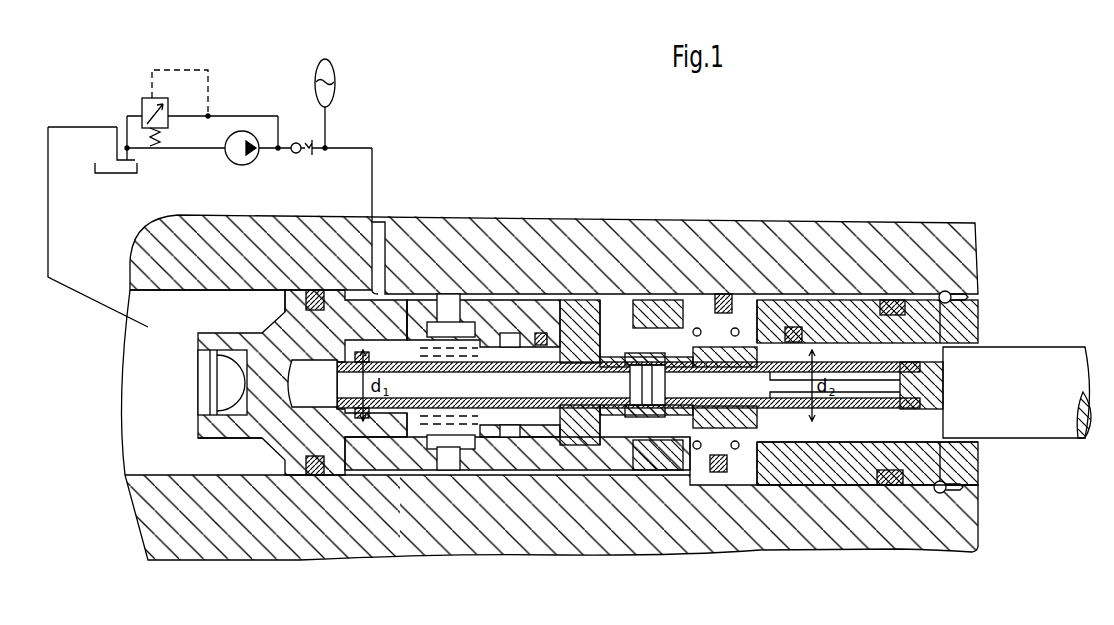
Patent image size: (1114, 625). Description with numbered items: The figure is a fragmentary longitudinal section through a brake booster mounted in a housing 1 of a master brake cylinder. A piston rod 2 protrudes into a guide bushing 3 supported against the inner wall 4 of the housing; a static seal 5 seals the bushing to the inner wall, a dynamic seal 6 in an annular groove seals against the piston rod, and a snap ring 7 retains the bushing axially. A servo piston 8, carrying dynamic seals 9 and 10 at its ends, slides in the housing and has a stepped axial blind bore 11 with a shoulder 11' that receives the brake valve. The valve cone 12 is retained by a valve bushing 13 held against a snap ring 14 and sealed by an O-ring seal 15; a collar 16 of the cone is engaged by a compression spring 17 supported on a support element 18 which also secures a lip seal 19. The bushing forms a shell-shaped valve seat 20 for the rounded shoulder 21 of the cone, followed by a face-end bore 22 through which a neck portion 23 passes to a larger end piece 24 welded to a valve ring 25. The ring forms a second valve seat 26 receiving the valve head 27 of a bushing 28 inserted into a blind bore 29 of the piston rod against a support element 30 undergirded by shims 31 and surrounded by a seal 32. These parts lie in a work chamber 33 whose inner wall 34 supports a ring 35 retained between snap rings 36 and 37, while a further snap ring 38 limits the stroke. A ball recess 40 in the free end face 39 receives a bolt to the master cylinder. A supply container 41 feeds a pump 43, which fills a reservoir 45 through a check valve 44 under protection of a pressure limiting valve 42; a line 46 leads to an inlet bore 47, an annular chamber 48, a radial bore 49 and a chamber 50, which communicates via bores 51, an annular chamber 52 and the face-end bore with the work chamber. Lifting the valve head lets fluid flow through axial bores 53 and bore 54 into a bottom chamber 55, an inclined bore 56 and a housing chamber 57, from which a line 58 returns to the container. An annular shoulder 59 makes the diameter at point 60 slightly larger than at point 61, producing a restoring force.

The housing 1 is at (835, 272).
The piston rod 2 is at (1015, 355).
The guide bushing 3 is at (968, 315).
The inner wall 4 is at (197, 474).
The static seal 5 is at (888, 298).
The dynamic seal 6 is at (800, 300).
The snap ring 7 is at (944, 290).
The servo piston 8 is at (655, 352).
The dynamic seal 9 is at (730, 294).
The dynamic seal 10 is at (315, 290).
The stepped axial blind bore 11 is at (517, 514).
The shoulder 11' is at (413, 446).
The valve cone 12 is at (485, 320).
The valve bushing 13 is at (600, 345).
The snap ring 14 is at (635, 348).
The O-ring seal 15 is at (560, 320).
The collar 16 is at (505, 430).
The compression spring 17 is at (462, 318).
The support element 18 is at (412, 320).
The lip seal 19 is at (400, 440).
The shell-shaped valve seat 20 is at (580, 445).
The rounded shoulder 21 is at (585, 300).
The face-end bore 22 is at (605, 445).
The neck portion 23 is at (612, 348).
The larger end piece 24 is at (642, 350).
The valve ring 25 is at (640, 470).
The second valve seat 26 is at (695, 328).
The valve head 27 is at (708, 300).
The bushing 28 is at (837, 440).
The blind bore 29 is at (830, 440).
The support element 30 is at (905, 445).
The shims 31 is at (935, 445).
The seal 32 is at (862, 445).
The work chamber 33 is at (760, 300).
The inner wall 34 is at (666, 330).
The ring 35 is at (757, 430).
The snap ring 36 is at (719, 474).
The snap ring 37 is at (738, 449).
The snap ring 38 is at (692, 478).
The free end face 39 is at (197, 420).
The ball recess 40 is at (208, 367).
The brake fluid supply container 41 is at (113, 174).
The pressure limiting valve 42 is at (147, 97).
The pump 43 is at (260, 158).
The one-way check valve 44 is at (296, 142).
The reservoir 45 is at (331, 70).
The line 46 is at (368, 146).
The inlet bore 47 is at (378, 230).
The annular chamber 48 is at (500, 333).
The radial bore 49 is at (444, 294).
The chamber 50 is at (455, 445).
The bores 51 is at (515, 432).
The annular chamber 52 is at (535, 333).
The axial bores 53 is at (655, 418).
The bore 54 is at (478, 424).
The bottom chamber 55 is at (305, 397).
The inclined bore 56 is at (292, 343).
The housing chamber 57 is at (201, 300).
The line 58 is at (50, 250).
The annular shoulder 59 is at (367, 420).
The point 60 is at (700, 449).
The point 61 is at (335, 478).